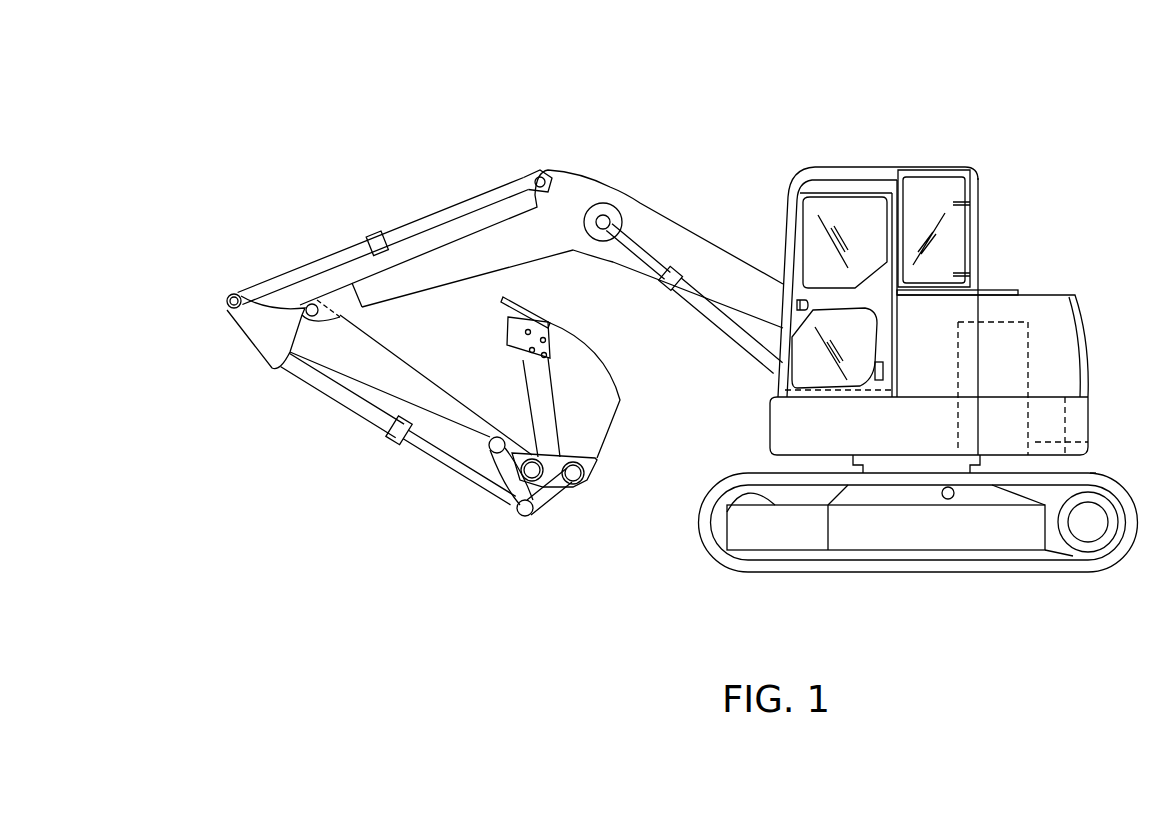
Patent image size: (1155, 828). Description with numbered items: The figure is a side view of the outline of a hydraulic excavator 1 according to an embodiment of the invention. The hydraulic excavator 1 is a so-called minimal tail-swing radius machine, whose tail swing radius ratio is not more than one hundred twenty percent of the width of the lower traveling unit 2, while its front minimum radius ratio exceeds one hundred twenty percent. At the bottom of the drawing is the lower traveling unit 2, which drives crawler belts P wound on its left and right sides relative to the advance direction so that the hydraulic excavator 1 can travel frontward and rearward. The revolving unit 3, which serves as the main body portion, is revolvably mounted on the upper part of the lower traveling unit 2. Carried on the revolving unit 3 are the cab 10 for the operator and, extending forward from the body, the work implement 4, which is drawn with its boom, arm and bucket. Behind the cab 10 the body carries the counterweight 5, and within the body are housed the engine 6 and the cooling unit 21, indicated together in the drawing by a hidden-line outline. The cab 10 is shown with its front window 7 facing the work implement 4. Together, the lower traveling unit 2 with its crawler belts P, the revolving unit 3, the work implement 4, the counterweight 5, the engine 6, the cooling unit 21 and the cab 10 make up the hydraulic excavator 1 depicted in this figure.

The hydraulic excavator 1 is at (1063, 107).
The lower traveling unit 2 is at (681, 563).
The revolving unit 3 is at (778, 420).
The work implement 4 is at (618, 118).
The counterweight 5 is at (1080, 337).
The engine 6 is at (1032, 368).
The cooling unit 21 is at (1056, 388).
The cab front window 7 is at (812, 228).
The cab 10 is at (781, 178).
The crawler belts P is at (1095, 475).